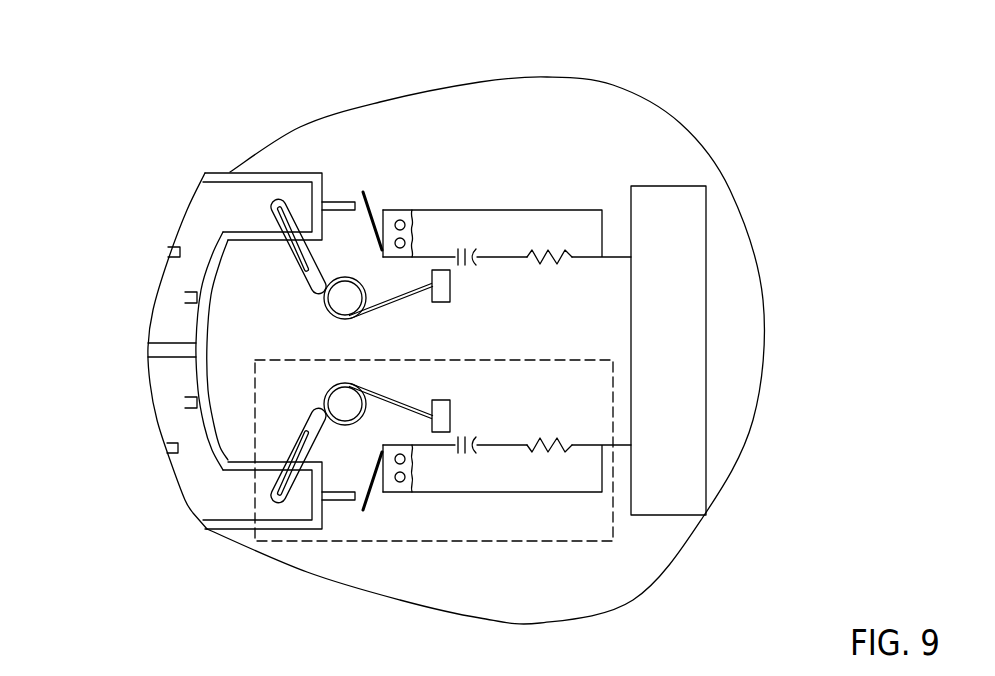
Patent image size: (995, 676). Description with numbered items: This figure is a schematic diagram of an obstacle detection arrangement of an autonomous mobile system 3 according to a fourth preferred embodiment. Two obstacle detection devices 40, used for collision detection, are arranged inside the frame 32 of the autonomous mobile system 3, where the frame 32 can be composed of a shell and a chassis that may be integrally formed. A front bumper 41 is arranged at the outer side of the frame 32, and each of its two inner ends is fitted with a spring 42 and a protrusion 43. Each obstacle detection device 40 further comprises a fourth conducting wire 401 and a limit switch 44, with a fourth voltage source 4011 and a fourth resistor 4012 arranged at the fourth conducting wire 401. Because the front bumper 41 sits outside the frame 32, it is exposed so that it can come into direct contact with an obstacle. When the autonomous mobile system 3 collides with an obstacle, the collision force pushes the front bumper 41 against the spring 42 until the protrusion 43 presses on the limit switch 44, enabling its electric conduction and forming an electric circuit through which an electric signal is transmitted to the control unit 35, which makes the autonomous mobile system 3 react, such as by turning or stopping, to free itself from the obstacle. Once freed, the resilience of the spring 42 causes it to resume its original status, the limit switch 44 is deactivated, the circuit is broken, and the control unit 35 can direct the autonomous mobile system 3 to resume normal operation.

The autonomous mobile system 3 is at (168, 132).
The frame 32 is at (763, 300).
The control unit 35 is at (668, 186).
The obstacle detection device 40 is at (343, 541).
The fourth conducting wire 401 is at (502, 209).
The fourth voltage source 4011 is at (472, 263).
The fourth resistor 4012 is at (567, 262).
The front bumper 41 is at (150, 383).
The spring 42 is at (322, 297).
The protrusion 43 is at (345, 202).
The limit switch 44 is at (392, 210).